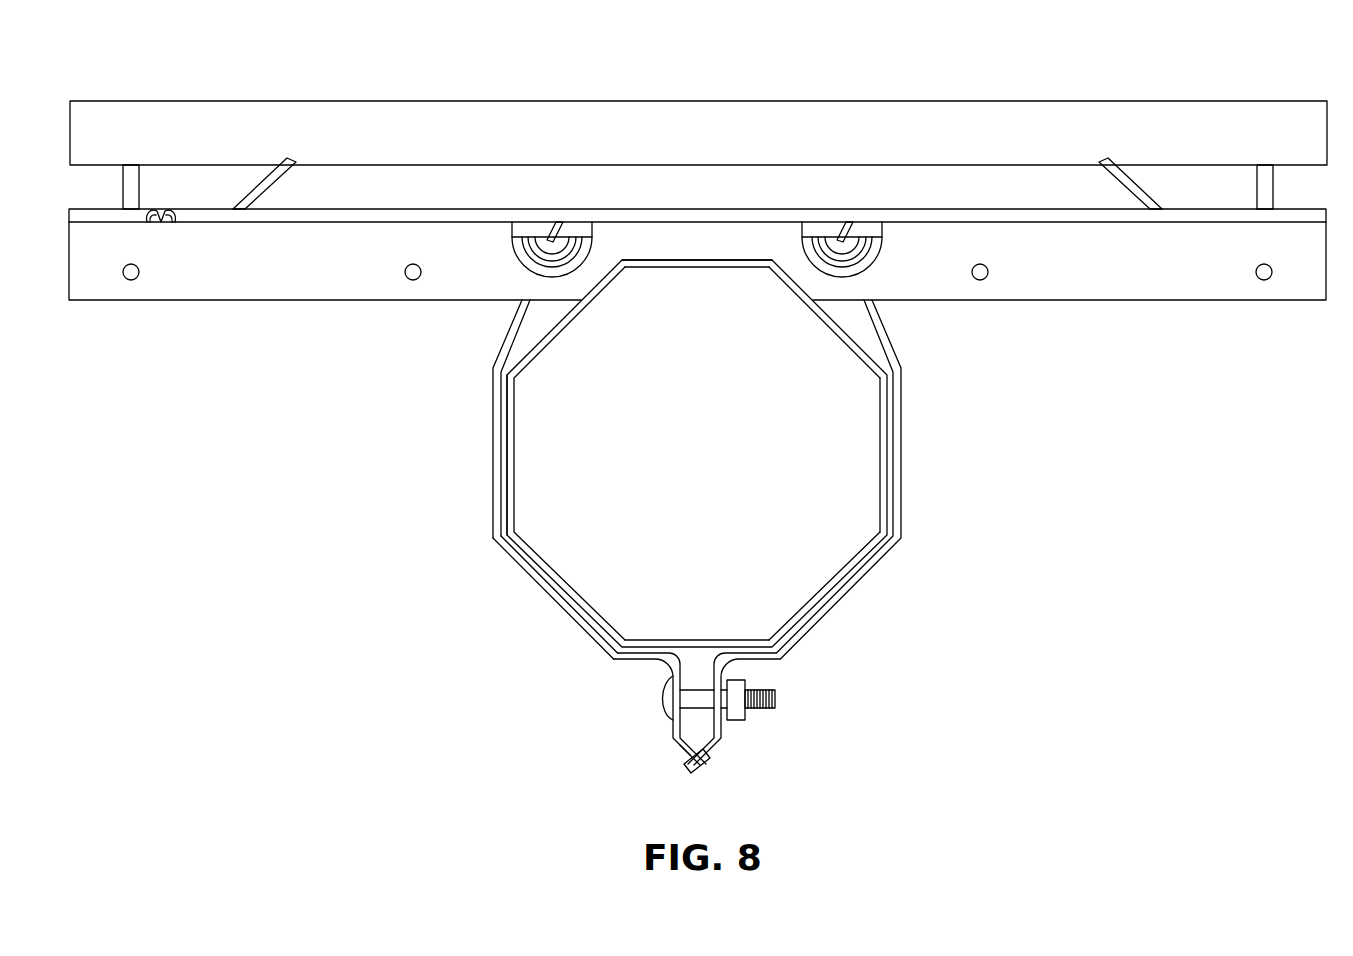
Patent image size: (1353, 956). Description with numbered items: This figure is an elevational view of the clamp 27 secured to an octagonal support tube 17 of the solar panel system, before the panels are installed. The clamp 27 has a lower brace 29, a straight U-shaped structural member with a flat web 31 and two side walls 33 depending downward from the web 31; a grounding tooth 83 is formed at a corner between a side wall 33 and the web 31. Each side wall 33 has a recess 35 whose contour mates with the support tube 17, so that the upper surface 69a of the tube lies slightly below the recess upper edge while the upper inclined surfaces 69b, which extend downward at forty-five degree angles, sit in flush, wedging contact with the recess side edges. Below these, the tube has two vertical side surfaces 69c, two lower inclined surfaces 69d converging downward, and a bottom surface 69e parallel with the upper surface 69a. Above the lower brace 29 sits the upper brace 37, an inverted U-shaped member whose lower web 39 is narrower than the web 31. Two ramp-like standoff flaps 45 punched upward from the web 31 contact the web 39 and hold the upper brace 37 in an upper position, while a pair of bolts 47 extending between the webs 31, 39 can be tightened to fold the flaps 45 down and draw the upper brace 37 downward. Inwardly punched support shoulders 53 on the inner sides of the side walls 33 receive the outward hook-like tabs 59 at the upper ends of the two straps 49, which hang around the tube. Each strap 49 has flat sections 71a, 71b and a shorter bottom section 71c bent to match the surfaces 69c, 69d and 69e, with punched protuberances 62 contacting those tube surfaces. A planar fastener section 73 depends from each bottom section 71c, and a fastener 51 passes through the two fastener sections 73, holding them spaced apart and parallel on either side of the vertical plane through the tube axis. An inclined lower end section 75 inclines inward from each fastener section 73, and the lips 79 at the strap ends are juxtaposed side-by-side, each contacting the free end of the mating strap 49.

The support tube 17 is at (856, 344).
The clamp 27 is at (1206, 64).
The lower brace 29 is at (345, 300).
The web 31 is at (1030, 200).
The side walls 33 is at (1178, 290).
The recess 35 is at (680, 262).
The upper brace 37 is at (422, 101).
The web 39 is at (955, 185).
The standoff flaps 45 is at (248, 193).
The bolts 47 is at (140, 186).
The straps 49 is at (916, 367).
The fastener 51 is at (733, 680).
The support shoulders 53 is at (562, 236).
The tabs 59 is at (850, 232).
The protuberances 62 is at (507, 508).
The upper surface 69a is at (720, 272).
The upper inclined surfaces 69b is at (862, 348).
The vertical side surfaces 69c is at (880, 462).
The lower inclined surfaces 69d is at (820, 592).
The bottom surface 69e is at (722, 638).
The flat section 71a is at (493, 432).
The flat section 71b is at (530, 573).
The flat bottom section 71c is at (661, 652).
The fastener section 73 is at (666, 712).
The inclined lower end section 75 is at (686, 748).
The lips 79 is at (694, 775).
The grounding tooth 83 is at (163, 222).